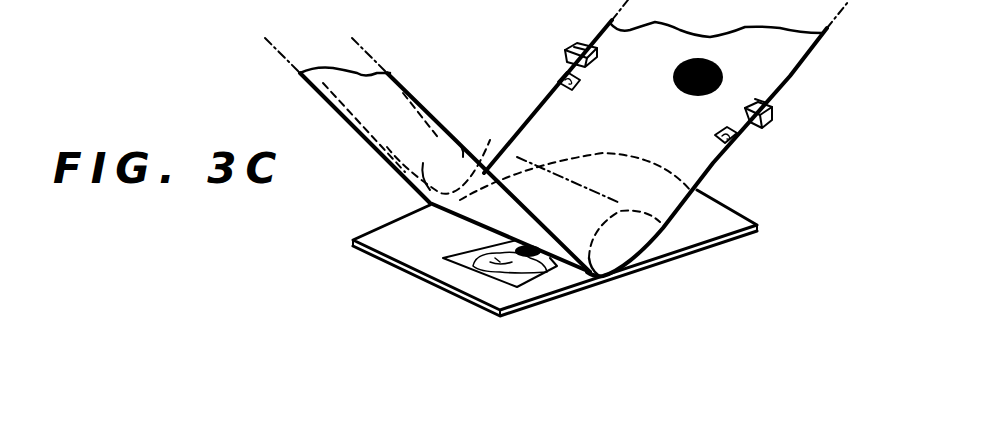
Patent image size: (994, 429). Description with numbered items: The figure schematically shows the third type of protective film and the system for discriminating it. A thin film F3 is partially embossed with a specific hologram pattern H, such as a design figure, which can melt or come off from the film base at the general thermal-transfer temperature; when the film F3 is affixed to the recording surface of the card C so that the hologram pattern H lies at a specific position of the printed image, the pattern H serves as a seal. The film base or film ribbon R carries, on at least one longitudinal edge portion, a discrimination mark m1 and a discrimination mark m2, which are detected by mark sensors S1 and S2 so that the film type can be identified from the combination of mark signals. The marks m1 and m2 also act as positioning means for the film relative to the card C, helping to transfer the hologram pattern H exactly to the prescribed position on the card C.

The thin film F3 is at (597, 127).
The film ribbon R is at (821, 41).
The card C is at (676, 240).
The hologram pattern H is at (724, 79).
The mark sensor S1 is at (772, 100).
The mark sensor S2 is at (588, 43).
The discrimination mark m1 is at (738, 138).
The discrimination mark m2 is at (566, 82).